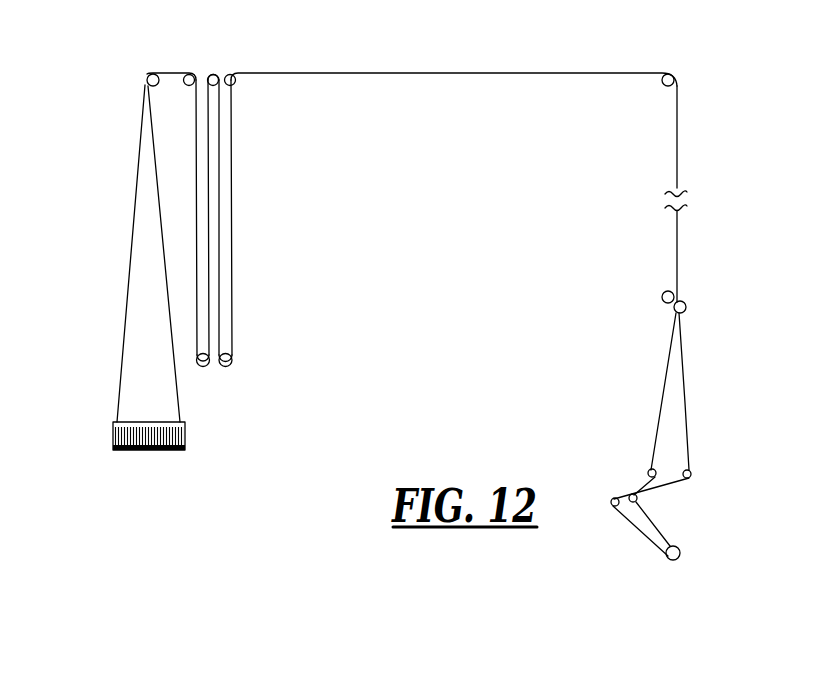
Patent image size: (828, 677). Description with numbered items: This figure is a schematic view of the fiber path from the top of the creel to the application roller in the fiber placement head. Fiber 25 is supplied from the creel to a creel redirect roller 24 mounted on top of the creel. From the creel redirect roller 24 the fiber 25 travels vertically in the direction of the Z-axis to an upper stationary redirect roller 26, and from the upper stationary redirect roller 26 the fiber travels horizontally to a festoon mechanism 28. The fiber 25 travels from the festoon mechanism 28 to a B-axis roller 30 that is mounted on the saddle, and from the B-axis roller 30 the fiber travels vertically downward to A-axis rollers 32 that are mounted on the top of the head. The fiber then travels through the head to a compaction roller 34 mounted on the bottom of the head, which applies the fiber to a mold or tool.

The creel redirect roller 24 is at (143, 430).
The fiber 25 is at (340, 72).
The upper stationary redirect roller 26 is at (147, 74).
The festoon mechanism 28 is at (195, 50).
The B-axis roller 30 is at (668, 74).
The A-axis rollers 32 is at (684, 290).
The compaction roller 34 is at (681, 552).